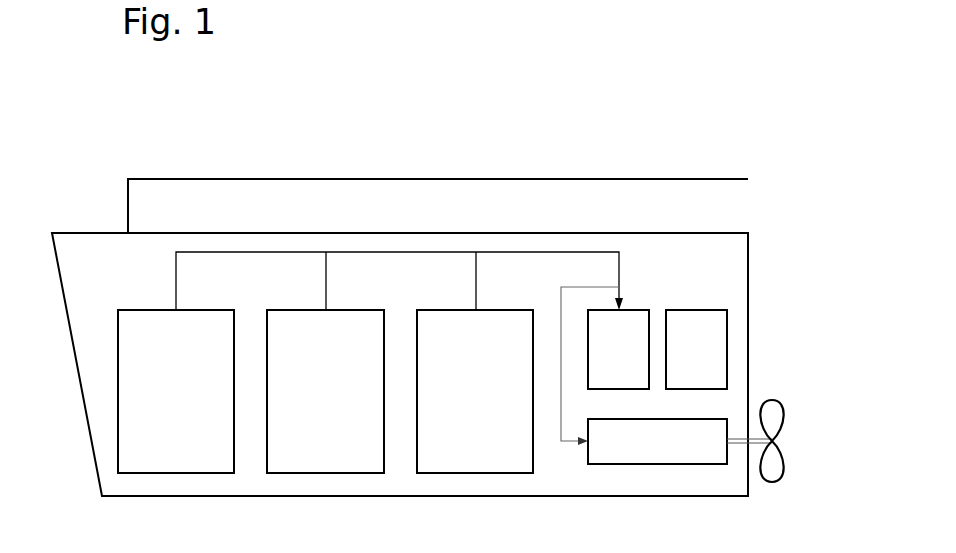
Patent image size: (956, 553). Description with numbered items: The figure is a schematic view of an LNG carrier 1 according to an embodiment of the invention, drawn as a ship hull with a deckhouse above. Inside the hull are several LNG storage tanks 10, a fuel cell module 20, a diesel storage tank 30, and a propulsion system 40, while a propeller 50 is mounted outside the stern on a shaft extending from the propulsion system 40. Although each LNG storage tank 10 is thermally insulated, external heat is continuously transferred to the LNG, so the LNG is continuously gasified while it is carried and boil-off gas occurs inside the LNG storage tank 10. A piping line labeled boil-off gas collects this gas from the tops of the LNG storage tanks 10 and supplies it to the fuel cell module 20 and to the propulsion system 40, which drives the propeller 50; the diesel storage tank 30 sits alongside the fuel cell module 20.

The LNG carrier 1 is at (68, 175).
The LNG storage tank 10 is at (175, 474).
The fuel cell module 20 is at (636, 308).
The diesel storage tank 30 is at (697, 308).
The propulsion system 40 is at (656, 465).
The propeller 50 is at (775, 401).